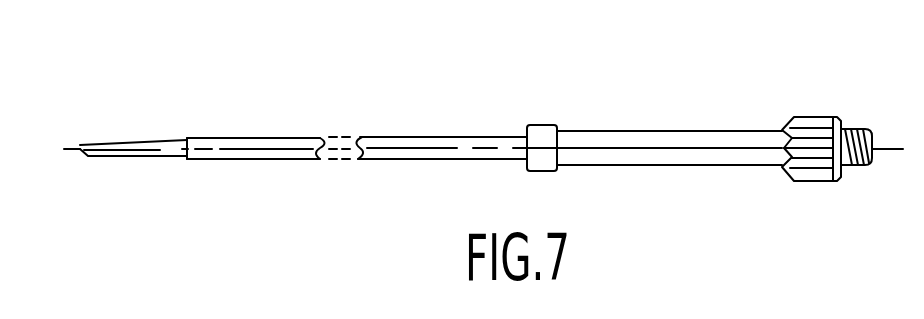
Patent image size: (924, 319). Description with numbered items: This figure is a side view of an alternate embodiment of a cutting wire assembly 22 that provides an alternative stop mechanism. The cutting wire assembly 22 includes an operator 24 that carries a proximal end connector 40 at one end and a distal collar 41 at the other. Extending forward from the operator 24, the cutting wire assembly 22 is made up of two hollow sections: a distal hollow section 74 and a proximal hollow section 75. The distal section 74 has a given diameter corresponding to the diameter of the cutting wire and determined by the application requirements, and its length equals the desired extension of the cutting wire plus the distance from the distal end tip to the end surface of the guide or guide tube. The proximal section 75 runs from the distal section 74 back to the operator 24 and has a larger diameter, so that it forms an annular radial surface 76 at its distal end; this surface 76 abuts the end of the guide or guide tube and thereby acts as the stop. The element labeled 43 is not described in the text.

The cutting wire assembly 22 is at (475, 100).
The distal hollow section 74 is at (92, 145).
The annular radial surface 76 is at (188, 138).
The proximal hollow section 75 is at (387, 137).
The distal collar 41 is at (542, 125).
The operator 24 is at (690, 130).
The proximal end connector 40 is at (820, 117).
The threaded stud 43 is at (884, 150).